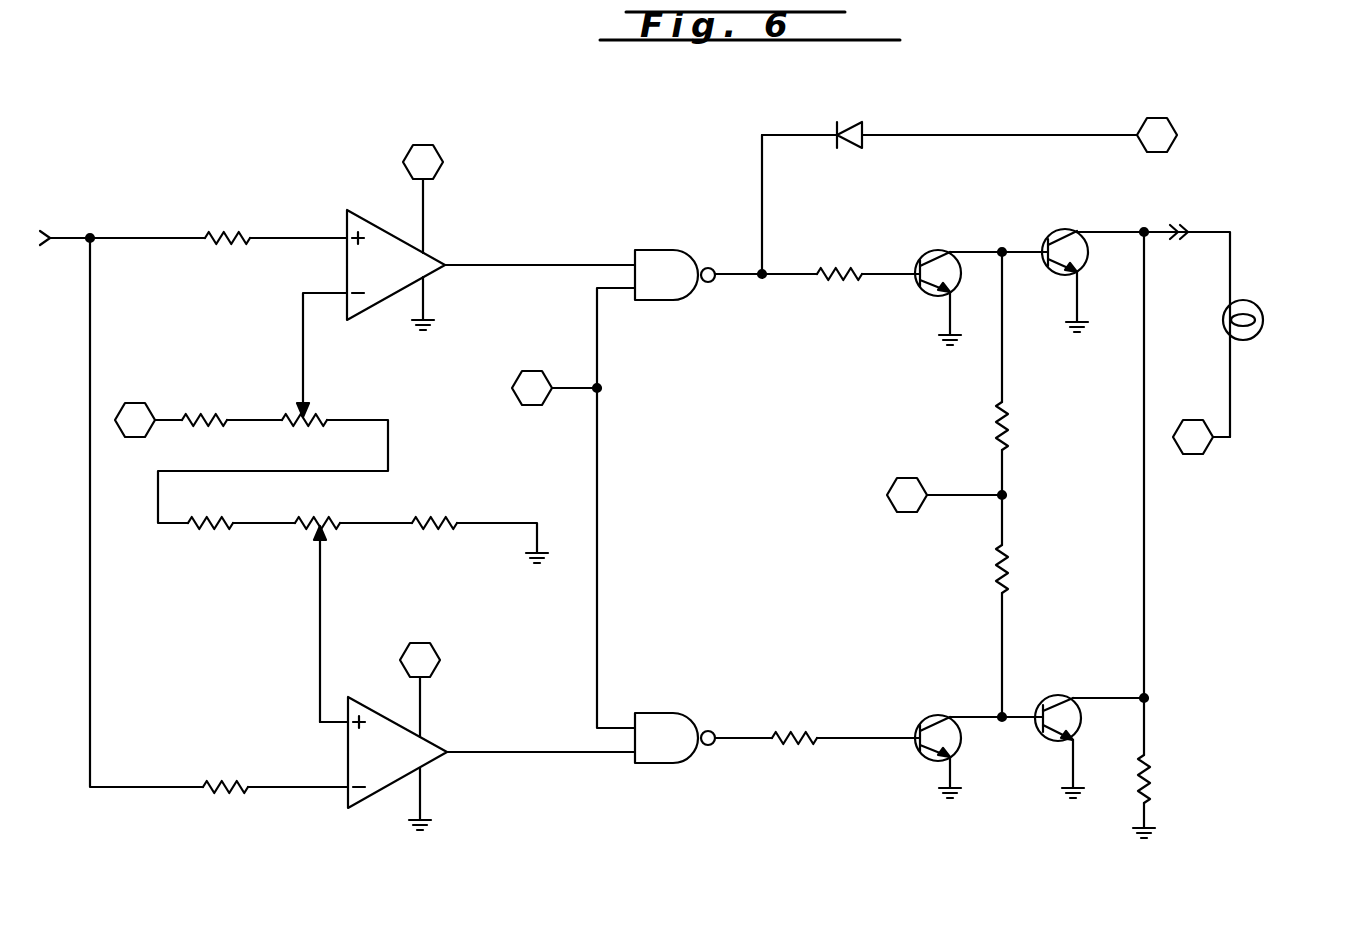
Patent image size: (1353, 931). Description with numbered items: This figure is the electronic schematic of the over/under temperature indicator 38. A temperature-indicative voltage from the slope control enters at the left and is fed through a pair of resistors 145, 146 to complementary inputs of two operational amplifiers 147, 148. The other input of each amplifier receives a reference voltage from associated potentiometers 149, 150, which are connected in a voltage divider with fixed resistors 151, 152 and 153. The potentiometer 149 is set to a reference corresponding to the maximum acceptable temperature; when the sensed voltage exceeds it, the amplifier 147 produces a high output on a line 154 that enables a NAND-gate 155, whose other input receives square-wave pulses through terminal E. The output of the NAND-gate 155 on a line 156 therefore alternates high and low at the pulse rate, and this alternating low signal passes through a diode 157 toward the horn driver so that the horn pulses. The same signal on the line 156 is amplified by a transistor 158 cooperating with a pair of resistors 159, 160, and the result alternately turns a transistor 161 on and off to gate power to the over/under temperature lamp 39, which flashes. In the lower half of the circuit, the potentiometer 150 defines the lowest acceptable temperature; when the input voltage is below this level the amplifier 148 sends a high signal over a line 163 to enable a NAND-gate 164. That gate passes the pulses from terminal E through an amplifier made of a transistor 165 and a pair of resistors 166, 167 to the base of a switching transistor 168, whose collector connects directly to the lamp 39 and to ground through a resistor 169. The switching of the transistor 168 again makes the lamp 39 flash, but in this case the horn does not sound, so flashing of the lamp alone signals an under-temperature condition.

The over/under temperature indicator 38 is at (668, 478).
The over/under temperature lamp 39 is at (1226, 332).
The resistor 145 is at (232, 236).
The resistor 146 is at (222, 784).
The operational amplifier 147 is at (352, 212).
The operational amplifier 148 is at (358, 806).
The potentiometer 149 is at (320, 416).
The potentiometer 150 is at (332, 506).
The fixed resistor 151 is at (200, 416).
The fixed resistor 152 is at (222, 505).
The fixed resistor 153 is at (444, 516).
The line 154 is at (542, 264).
The NAND-gate 155 is at (671, 258).
The line 156 is at (762, 198).
The diode 157 is at (850, 122).
The transistor 158 is at (935, 248).
The resistor 159 is at (838, 254).
The resistor 160 is at (1008, 430).
The transistor 161 is at (1063, 230).
The line 163 is at (542, 751).
The NAND-gate 164 is at (674, 723).
The transistor 165 is at (930, 716).
The resistor 166 is at (802, 718).
The resistor 167 is at (1008, 574).
The switching transistor 168 is at (1058, 696).
The resistor 169 is at (1150, 776).